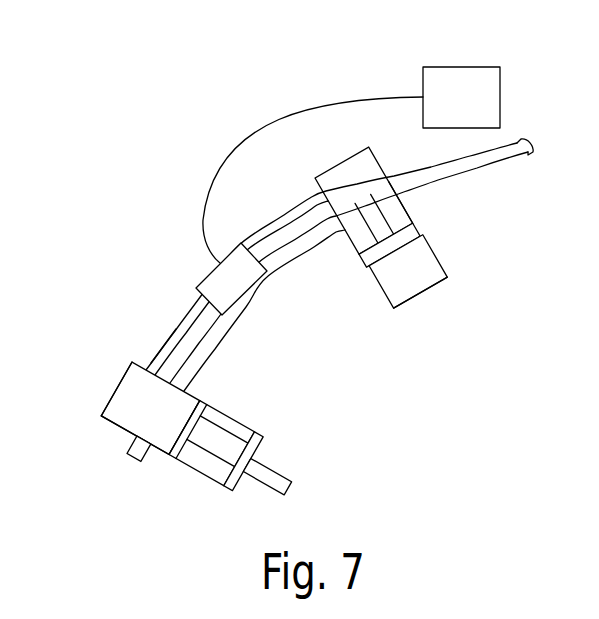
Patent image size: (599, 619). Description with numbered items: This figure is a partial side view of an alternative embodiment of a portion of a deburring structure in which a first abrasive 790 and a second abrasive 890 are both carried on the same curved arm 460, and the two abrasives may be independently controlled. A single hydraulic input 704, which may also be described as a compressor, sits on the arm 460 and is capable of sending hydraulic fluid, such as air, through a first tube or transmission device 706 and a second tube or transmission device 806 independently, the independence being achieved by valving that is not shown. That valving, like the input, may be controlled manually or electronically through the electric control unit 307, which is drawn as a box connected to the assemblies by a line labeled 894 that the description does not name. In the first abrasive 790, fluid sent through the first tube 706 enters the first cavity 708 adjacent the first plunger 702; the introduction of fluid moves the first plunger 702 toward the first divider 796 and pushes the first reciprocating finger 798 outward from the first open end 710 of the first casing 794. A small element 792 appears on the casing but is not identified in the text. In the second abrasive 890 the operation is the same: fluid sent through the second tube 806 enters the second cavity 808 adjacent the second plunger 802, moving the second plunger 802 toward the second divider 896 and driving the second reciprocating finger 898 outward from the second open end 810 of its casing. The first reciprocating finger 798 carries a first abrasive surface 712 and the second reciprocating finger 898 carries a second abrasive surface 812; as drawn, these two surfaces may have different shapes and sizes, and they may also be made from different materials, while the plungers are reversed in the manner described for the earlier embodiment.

The electric control unit 307 is at (472, 67).
The arm 460 is at (516, 142).
The second plunger 802 is at (371, 175).
The second cavity 808 is at (349, 170).
The cable 894 is at (330, 168).
The second tube or transmission device 806 is at (275, 224).
The hydraulic input 704 is at (209, 273).
The first tube or transmission device 706 is at (163, 345).
The second abrasive 890 is at (393, 214).
The second reciprocating finger 898 is at (443, 265).
The second divider 896 is at (356, 240).
The second abrasive surface 812 is at (417, 302).
The second open end 810 is at (389, 308).
The first casing 794 is at (123, 381).
The first cavity 708 is at (125, 398).
The first plunger 702 is at (165, 422).
The mount 792 is at (132, 468).
The first divider 796 is at (187, 452).
The first abrasive 790 is at (217, 418).
The first open end 710 is at (242, 422).
The first reciprocating finger 798 is at (276, 465).
The first abrasive surface 712 is at (291, 487).